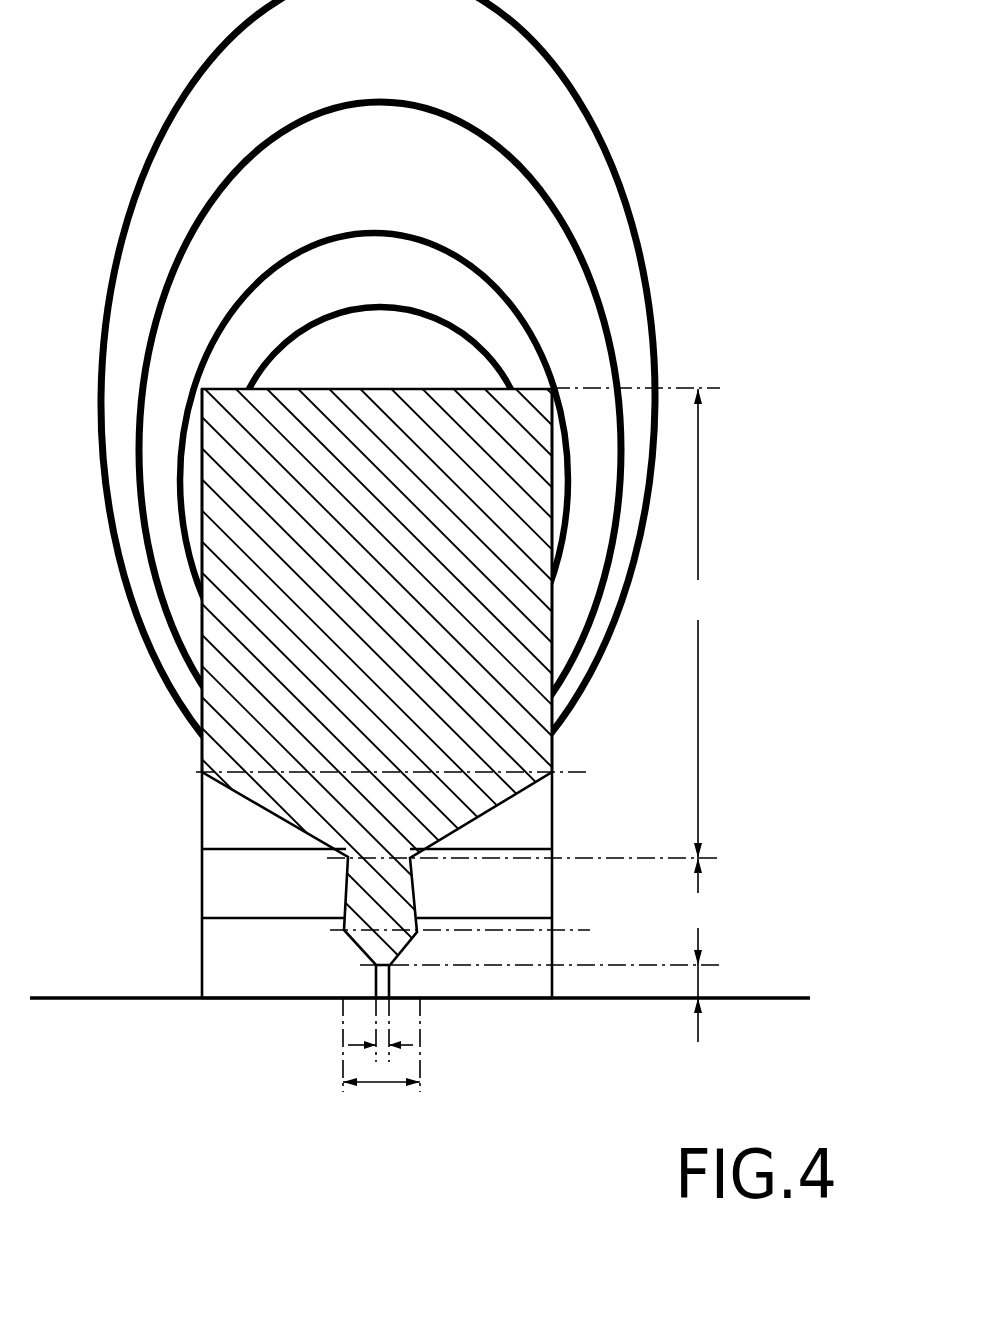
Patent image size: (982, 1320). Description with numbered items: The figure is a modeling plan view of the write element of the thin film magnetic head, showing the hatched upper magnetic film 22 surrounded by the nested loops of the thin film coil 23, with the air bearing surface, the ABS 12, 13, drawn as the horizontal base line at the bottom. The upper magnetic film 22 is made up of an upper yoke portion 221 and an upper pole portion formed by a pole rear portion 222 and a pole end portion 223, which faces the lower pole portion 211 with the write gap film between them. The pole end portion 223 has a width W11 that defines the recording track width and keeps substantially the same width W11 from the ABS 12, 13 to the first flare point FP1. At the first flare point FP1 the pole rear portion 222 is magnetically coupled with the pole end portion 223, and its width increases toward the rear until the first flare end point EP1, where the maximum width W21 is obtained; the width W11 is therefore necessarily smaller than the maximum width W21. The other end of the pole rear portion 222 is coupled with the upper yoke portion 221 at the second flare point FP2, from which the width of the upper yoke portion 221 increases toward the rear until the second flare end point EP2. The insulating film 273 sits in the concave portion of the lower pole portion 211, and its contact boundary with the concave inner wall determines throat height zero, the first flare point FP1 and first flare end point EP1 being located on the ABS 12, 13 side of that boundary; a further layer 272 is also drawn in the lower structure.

The upper magnetic film 22 is at (178, 721).
The thin film coil 23 is at (607, 325).
The upper yoke portion 221 is at (709, 623).
The pole rear portion 222 is at (712, 911).
The pole end portion 223 is at (702, 986).
The insulating layer 272 is at (212, 832).
The insulating film 273 is at (222, 896).
The lower pole portion 211 is at (215, 960).
The ABS 12 is at (513, 1000).
The ABS 13 is at (420, 1028).
The width of pole end portion W11 is at (388, 1048).
The maximum width of pole rear portion W21 is at (385, 1083).
The first flare end point EP1 is at (487, 932).
The second flare end point EP2 is at (421, 773).
The first flare point FP1 is at (570, 966).
The second flare point FP2 is at (554, 859).